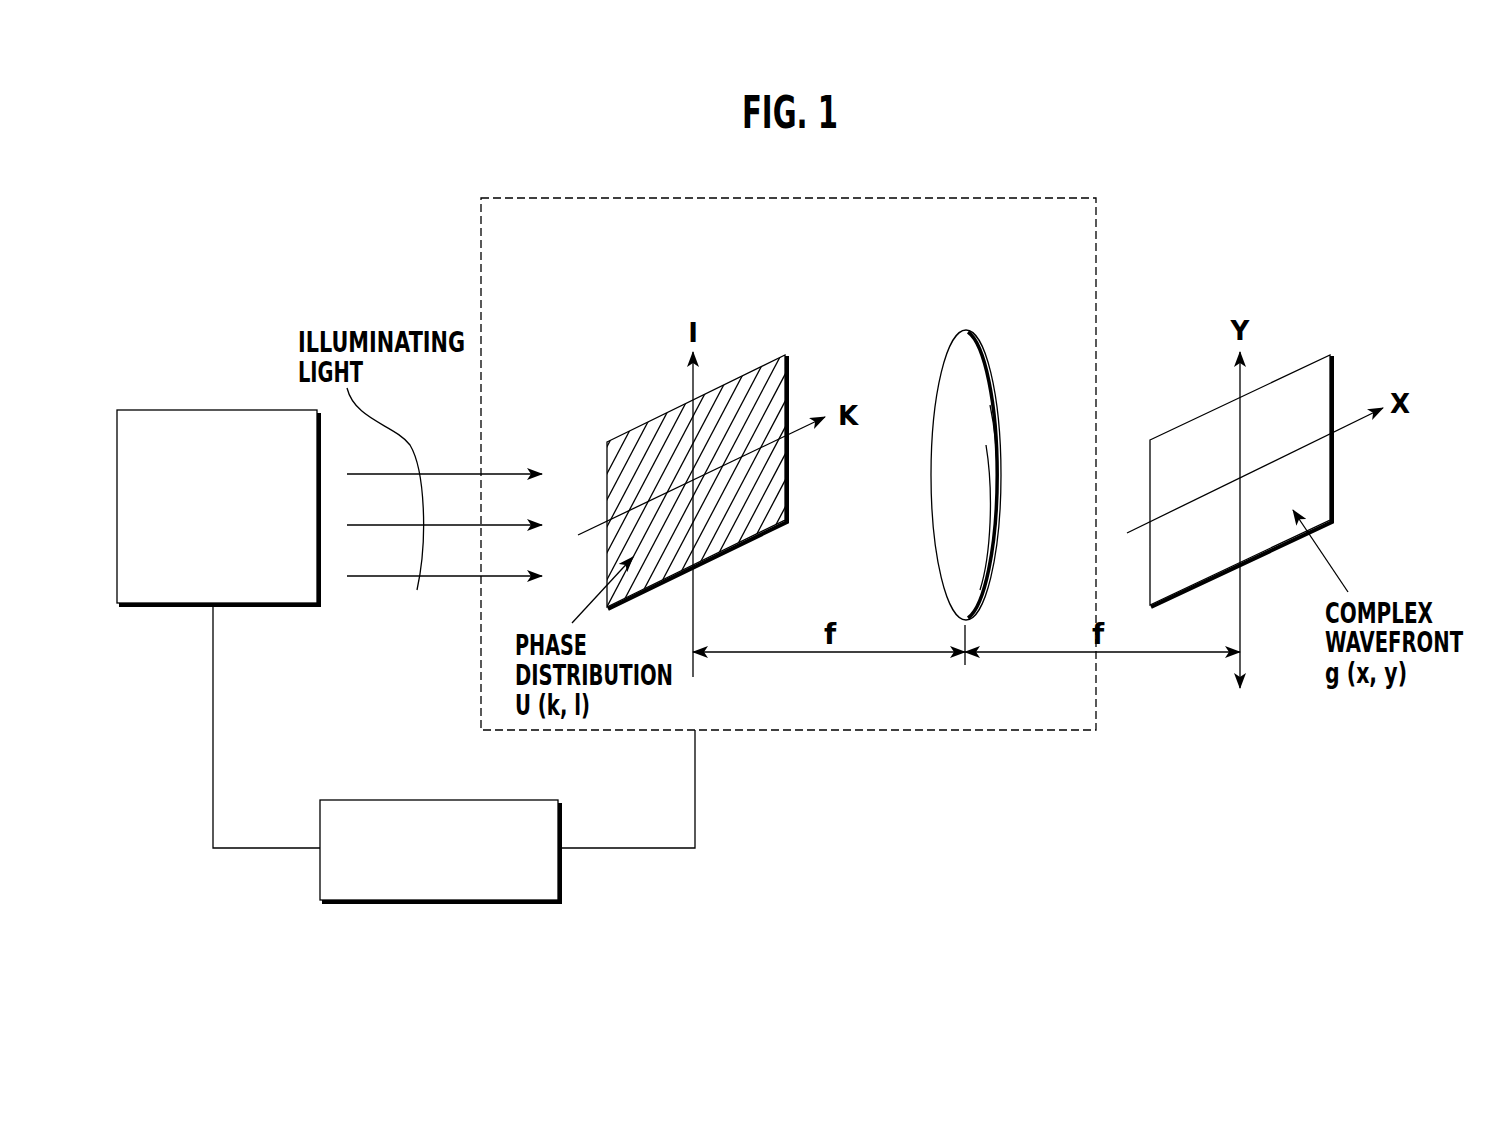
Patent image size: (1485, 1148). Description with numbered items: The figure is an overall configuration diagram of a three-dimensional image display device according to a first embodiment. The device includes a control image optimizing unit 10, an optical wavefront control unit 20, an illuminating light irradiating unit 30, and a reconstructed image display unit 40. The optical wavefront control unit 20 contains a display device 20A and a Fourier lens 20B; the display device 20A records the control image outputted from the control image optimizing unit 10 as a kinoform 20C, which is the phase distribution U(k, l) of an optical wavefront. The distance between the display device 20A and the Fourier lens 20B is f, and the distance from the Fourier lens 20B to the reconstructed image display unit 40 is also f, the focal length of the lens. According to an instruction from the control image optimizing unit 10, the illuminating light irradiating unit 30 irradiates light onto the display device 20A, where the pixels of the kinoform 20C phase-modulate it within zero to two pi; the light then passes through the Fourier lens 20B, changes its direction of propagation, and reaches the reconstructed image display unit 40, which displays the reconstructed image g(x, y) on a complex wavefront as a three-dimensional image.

The control image optimizing unit 10 is at (408, 800).
The optical wavefront control unit 20 is at (925, 732).
The display device 20A is at (750, 363).
The Fourier lens 20B is at (960, 330).
The kinoform 20C is at (733, 512).
The illuminating light irradiating unit 30 is at (225, 410).
The reconstructed image display unit 40 is at (1300, 362).